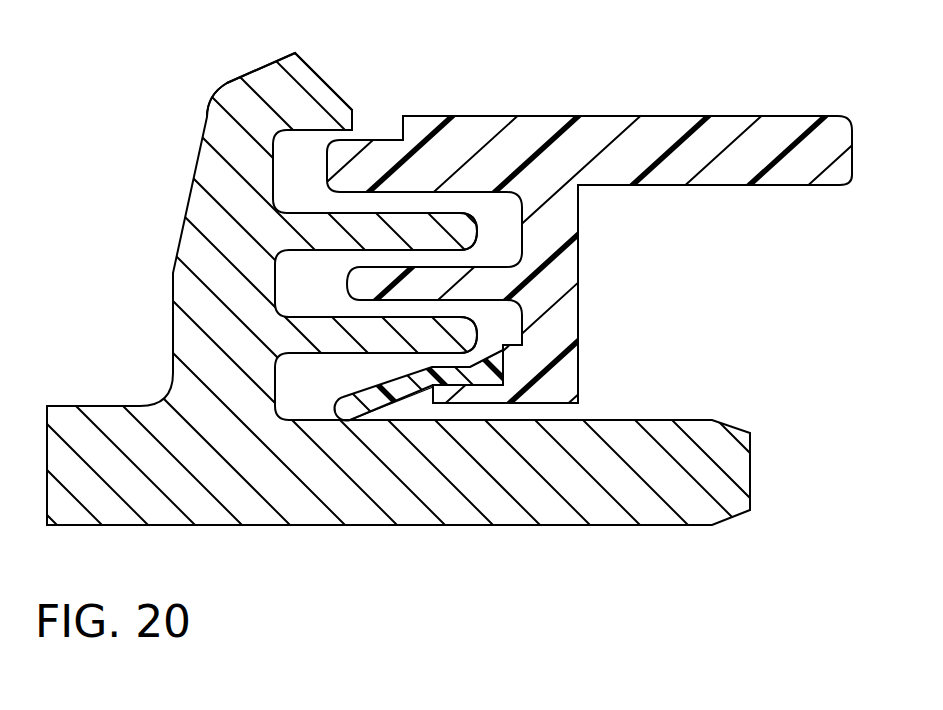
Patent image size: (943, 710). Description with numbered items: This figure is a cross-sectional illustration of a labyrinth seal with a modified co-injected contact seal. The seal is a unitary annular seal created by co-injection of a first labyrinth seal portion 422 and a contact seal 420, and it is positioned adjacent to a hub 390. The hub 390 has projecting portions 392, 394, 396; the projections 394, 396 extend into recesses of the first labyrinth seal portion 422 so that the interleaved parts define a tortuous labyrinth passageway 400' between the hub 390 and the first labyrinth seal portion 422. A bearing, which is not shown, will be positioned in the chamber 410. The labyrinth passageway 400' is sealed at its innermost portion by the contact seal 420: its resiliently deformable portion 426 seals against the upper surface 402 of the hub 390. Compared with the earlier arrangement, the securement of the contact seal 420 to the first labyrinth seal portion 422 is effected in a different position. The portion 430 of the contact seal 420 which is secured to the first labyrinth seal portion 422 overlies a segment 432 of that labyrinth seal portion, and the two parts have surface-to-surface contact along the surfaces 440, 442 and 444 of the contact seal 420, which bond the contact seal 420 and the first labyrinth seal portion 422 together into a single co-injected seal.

The hub 390 is at (160, 306).
The projecting portion 392 is at (324, 94).
The projecting portion 394 is at (330, 222).
The projecting portion 396 is at (336, 318).
The labyrinth passageway 400' is at (392, 100).
The upper surface of the hub 402 is at (297, 418).
The chamber 410 is at (790, 276).
The contact seal 420 is at (332, 389).
The first labyrinth seal portion 422 is at (605, 105).
The resiliently deformable portion 426 is at (392, 398).
The portion of the contact seal 430 is at (478, 365).
The segment 432 is at (512, 409).
The surface 440 is at (454, 398).
The surface 442 is at (488, 408).
The surface 444 is at (508, 404).